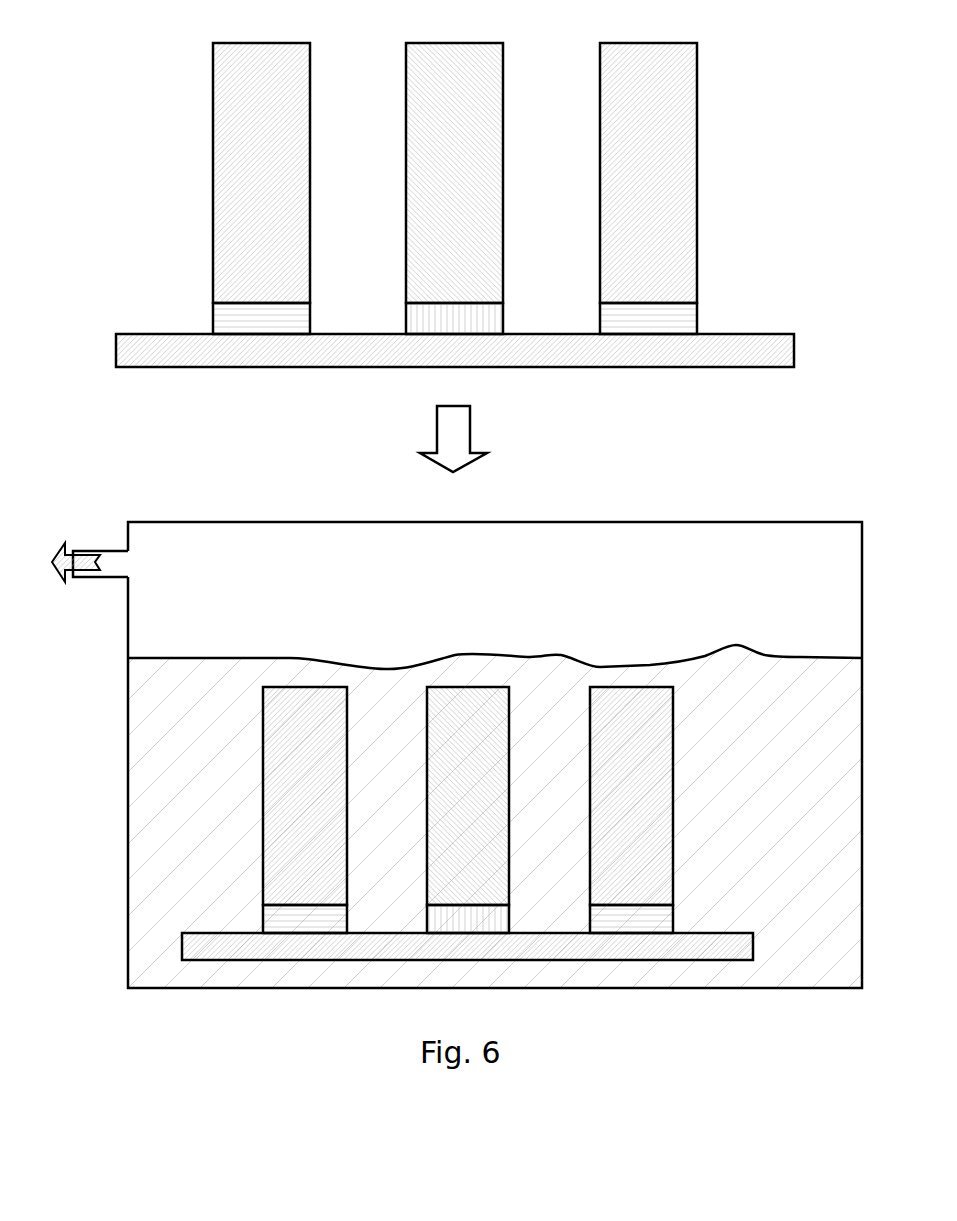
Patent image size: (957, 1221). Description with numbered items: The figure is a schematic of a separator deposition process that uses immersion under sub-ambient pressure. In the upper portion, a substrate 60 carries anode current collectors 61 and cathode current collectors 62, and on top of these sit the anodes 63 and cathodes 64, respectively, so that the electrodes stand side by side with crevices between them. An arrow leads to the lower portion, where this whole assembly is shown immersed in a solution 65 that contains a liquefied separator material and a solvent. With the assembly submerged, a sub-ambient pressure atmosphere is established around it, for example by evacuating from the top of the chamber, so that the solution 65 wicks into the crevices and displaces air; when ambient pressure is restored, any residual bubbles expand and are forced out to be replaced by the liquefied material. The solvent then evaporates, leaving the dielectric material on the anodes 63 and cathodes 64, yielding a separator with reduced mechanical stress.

The substrate 60 is at (148, 352).
The anode current collectors 61 is at (255, 323).
The cathode current collectors 62 is at (482, 323).
The anodes 63 is at (237, 164).
The cathodes 64 is at (483, 130).
The solution 65 is at (167, 881).